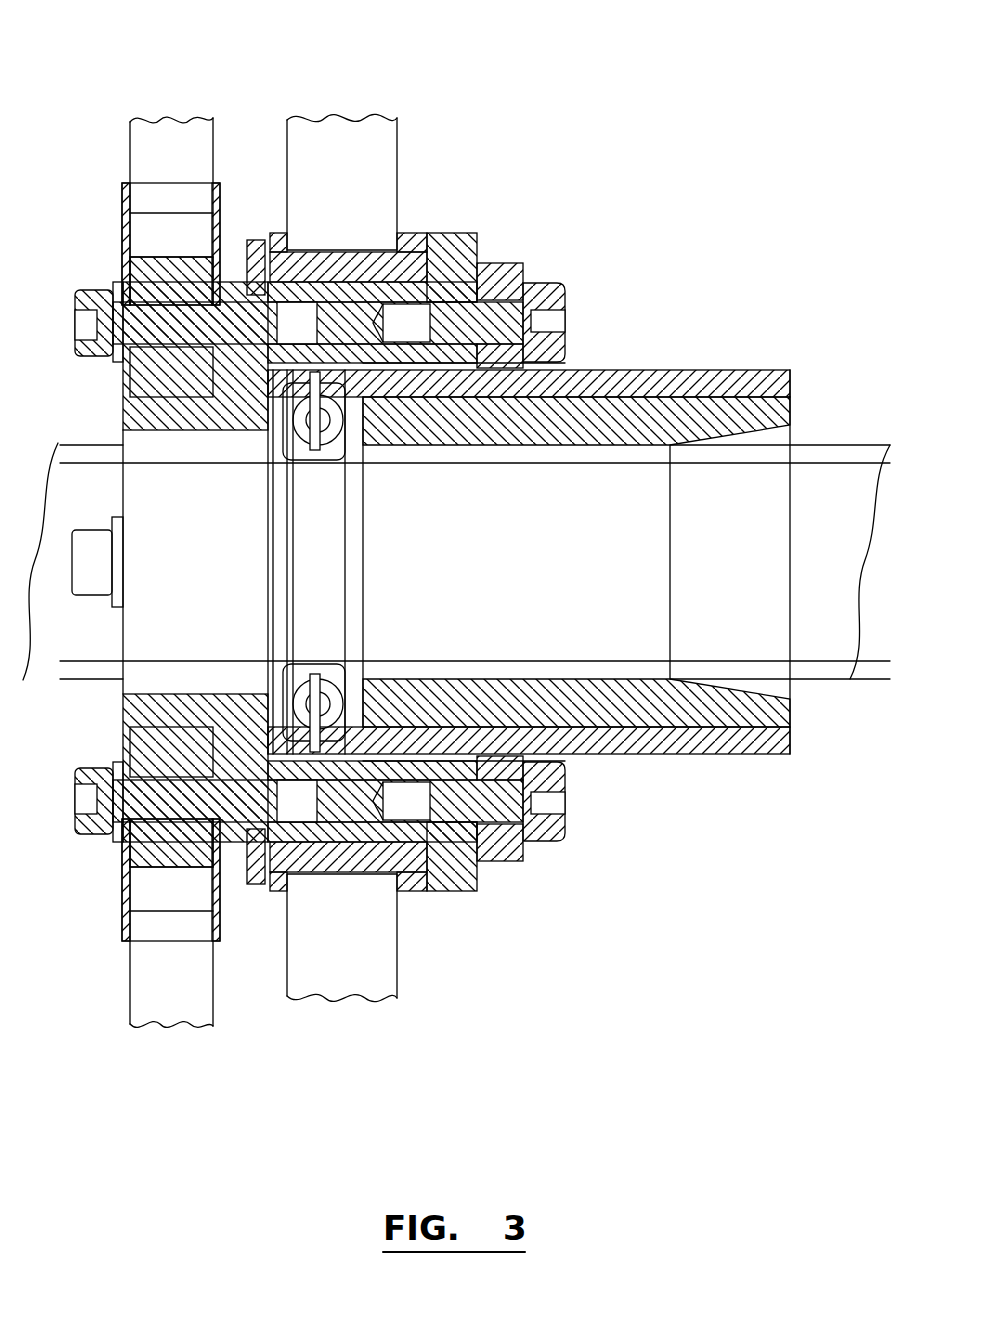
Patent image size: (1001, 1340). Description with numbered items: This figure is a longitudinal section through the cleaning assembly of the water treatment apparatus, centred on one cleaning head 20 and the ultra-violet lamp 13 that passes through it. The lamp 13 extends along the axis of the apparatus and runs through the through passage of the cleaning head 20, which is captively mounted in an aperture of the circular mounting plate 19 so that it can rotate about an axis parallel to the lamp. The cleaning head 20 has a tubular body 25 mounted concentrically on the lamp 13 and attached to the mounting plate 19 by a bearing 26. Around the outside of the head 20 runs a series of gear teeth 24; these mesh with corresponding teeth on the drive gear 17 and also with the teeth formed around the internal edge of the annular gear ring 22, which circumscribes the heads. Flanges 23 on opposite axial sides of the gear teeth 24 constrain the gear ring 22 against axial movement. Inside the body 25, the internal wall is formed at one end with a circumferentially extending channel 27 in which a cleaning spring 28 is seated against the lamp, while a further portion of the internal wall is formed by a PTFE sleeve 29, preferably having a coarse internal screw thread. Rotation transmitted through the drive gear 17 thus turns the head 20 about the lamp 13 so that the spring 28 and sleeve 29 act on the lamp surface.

The ultra-violet lamp 13 is at (832, 452).
The drive gear 17 is at (172, 992).
The mounting plate 19 is at (346, 175).
The cleaning head 20 is at (553, 265).
The annular gear ring 22 is at (172, 155).
The flanges 23 is at (126, 213).
The gear teeth 24 is at (150, 242).
The tubular body 25 is at (705, 385).
The bearing 26 is at (414, 876).
The circumferentially extending channel 27 is at (292, 432).
The cleaning spring 28 is at (320, 690).
The PTFE sleeve 29 is at (722, 712).